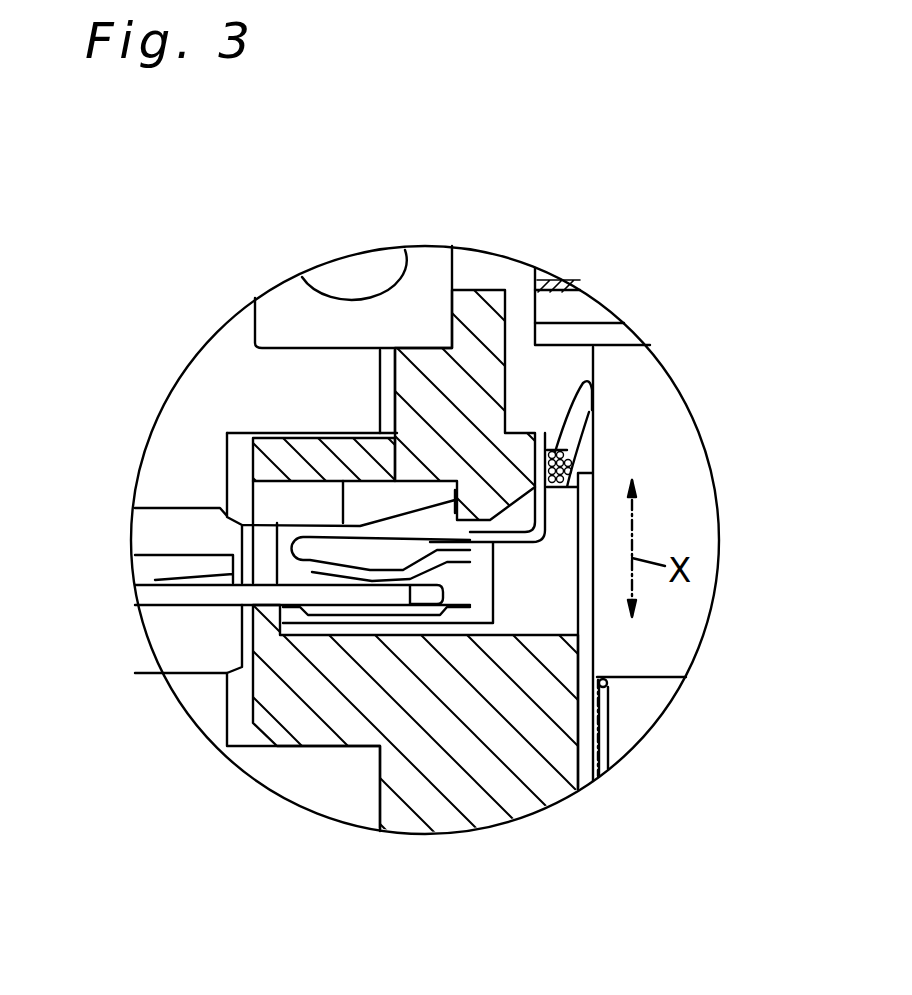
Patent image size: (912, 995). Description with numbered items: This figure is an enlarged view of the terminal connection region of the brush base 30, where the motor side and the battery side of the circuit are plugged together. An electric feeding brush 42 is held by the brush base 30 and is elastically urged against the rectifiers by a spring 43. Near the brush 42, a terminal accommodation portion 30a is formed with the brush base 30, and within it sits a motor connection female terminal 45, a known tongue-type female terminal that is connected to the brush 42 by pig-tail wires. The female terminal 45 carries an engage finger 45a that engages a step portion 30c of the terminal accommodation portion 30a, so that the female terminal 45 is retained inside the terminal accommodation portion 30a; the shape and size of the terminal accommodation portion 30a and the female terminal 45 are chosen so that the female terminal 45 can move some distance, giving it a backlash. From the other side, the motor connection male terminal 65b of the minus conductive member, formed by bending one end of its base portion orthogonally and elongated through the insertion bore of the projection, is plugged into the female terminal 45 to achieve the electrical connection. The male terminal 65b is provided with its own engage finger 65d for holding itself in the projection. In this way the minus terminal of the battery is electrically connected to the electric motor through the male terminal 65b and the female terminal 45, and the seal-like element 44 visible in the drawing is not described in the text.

The brush base 30 is at (478, 310).
The terminal accommodation portion 30a is at (505, 613).
The step portion 30c is at (527, 322).
The electric feeding brush 42 is at (680, 493).
The spring 43 is at (613, 748).
The lip seal 44 is at (600, 436).
The motor connection female terminal 45 is at (345, 478).
The engage finger 45a is at (377, 388).
The motor connection male terminal 65b is at (207, 596).
The engage finger 65d is at (180, 573).